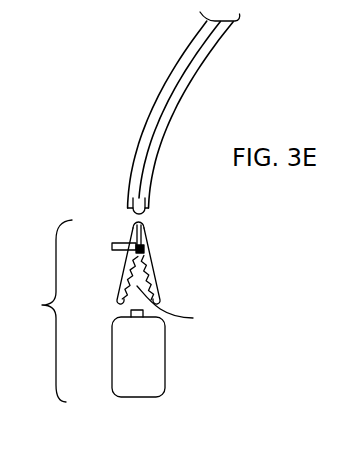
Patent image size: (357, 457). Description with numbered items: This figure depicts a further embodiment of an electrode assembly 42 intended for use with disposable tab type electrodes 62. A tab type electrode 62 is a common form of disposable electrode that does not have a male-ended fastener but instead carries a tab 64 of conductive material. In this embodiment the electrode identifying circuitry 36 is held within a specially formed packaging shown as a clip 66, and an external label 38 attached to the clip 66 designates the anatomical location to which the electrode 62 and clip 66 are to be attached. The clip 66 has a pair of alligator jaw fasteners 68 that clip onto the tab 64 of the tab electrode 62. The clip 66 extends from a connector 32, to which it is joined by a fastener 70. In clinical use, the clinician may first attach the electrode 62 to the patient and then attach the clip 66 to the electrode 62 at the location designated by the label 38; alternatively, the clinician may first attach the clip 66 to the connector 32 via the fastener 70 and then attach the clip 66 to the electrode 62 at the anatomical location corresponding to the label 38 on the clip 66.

The connector 32 is at (173, 74).
The fastener 70 is at (144, 212).
The clip 66 is at (156, 271).
The electrode identifying circuitry 36 is at (145, 250).
The external label 38 is at (117, 242).
The alligator jaw fasteners 68 is at (178, 306).
The tab 64 is at (130, 312).
The tab type electrode 62 is at (166, 360).
The electrode assembly 42 is at (44, 311).